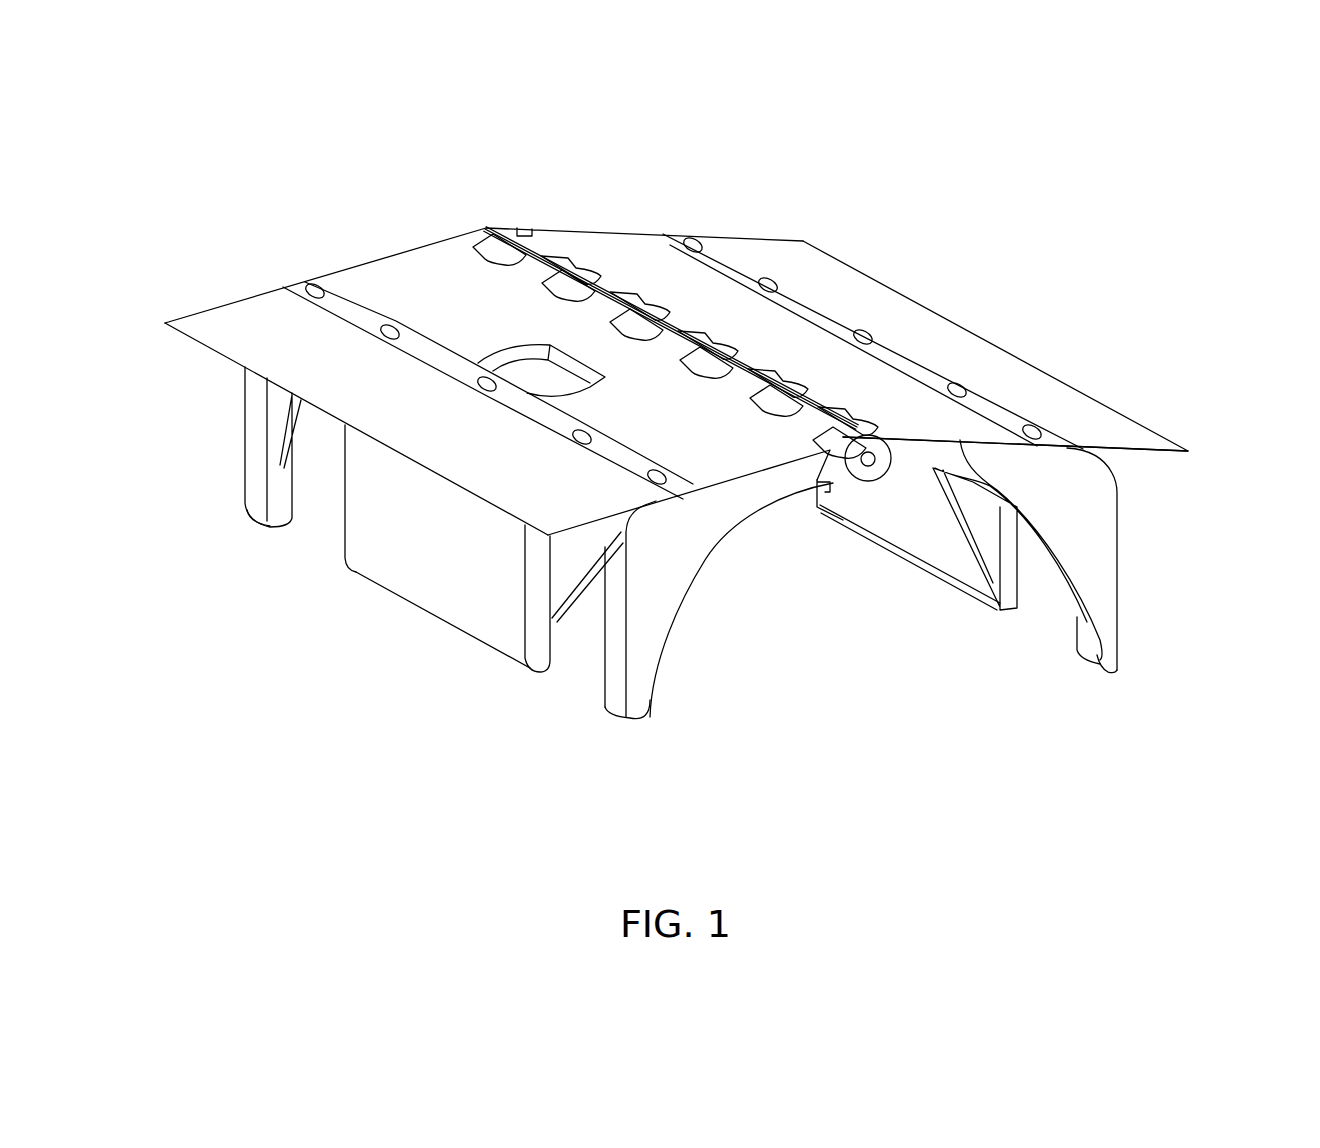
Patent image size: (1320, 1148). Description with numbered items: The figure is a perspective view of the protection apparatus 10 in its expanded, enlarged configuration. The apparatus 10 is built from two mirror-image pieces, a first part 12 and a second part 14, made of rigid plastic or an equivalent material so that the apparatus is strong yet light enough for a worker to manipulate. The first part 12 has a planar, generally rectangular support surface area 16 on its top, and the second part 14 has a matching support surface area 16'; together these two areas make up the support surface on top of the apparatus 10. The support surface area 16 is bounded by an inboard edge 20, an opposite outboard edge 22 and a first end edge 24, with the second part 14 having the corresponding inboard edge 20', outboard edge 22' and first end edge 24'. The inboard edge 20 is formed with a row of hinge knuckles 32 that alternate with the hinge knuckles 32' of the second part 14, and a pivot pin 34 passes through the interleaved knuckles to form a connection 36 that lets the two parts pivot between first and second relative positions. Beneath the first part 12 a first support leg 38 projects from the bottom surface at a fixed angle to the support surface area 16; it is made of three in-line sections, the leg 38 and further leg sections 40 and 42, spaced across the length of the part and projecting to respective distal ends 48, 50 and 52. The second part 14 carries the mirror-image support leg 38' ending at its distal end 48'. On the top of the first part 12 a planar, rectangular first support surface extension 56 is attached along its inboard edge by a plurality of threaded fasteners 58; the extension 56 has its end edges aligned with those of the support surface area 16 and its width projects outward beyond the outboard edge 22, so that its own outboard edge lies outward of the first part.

The protection apparatus 10 is at (745, 163).
The first part 12 is at (384, 200).
The second part 14 is at (629, 185).
The support surface area 16 is at (506, 253).
The support surface area 16' is at (873, 316).
The inboard edge 20 is at (896, 538).
The inboard edge 20' is at (957, 398).
The outboard edge 22 is at (512, 607).
The outboard edge 22' is at (1046, 468).
The first end edge 24 is at (741, 600).
The first end edge 24' is at (1017, 552).
The hinge knuckles 32 is at (701, 334).
The hinge knuckles 32' is at (903, 368).
The pivot pin 34 is at (868, 470).
The connection 36 is at (515, 195).
The first support leg 38 is at (680, 624).
The first support leg 38' is at (1146, 559).
The leg section 40 is at (408, 547).
The leg section 42 is at (258, 470).
The distal end 48 is at (604, 745).
The distal end 48' is at (1127, 703).
The distal end 50 is at (408, 603).
The distal end 52 is at (268, 522).
The first support surface extension 56 is at (285, 338).
The threaded fasteners 58 is at (314, 286).